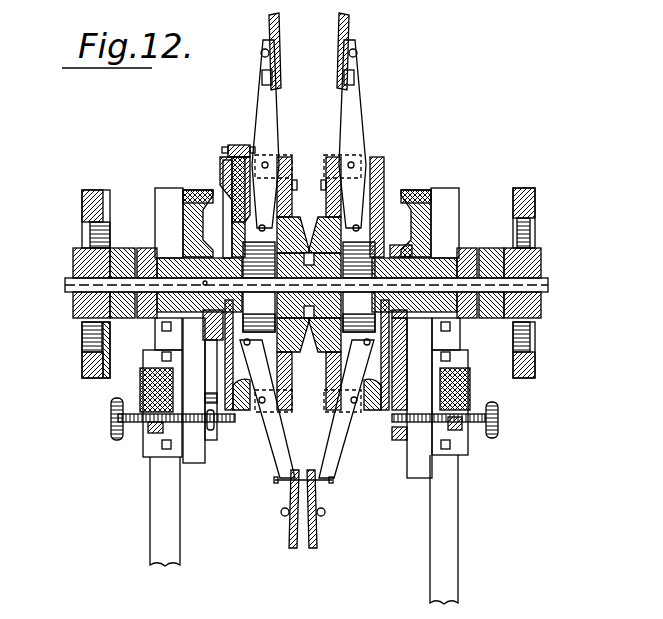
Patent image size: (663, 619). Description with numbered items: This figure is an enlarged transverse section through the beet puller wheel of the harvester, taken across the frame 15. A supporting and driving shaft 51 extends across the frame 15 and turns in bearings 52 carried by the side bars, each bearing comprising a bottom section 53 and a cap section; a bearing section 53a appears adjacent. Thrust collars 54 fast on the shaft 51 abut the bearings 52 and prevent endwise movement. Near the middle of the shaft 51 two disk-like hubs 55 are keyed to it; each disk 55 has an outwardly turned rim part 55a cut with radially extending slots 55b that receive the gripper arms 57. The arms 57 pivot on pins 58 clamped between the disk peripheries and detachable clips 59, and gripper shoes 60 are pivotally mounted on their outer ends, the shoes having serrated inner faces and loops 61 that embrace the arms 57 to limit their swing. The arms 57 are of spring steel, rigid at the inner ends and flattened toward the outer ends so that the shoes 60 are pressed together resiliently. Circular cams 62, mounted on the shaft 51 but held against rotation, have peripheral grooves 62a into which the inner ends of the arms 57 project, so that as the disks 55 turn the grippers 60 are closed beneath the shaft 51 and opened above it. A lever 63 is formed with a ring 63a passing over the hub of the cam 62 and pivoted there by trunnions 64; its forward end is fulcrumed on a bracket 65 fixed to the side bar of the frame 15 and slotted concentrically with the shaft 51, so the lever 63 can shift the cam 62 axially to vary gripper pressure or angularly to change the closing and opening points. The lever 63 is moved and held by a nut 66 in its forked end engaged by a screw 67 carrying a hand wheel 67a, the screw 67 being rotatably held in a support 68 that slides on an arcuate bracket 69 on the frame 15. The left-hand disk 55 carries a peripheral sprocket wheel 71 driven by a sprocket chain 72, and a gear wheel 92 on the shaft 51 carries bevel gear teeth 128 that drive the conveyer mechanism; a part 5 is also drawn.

The collar 5 is at (149, 250).
The frame 15 is at (160, 481).
The supporting and driving shaft 51 is at (68, 281).
The bearing 52 is at (169, 258).
The bottom section 53 is at (307, 325).
The sleeve 53a is at (120, 318).
The thrust collar 54 is at (125, 248).
The disk-like hub 55 is at (293, 192).
The outwardly turned rim part 55a is at (230, 195).
The radially extending slot 55b is at (243, 190).
The gripper arm 57 is at (348, 107).
The pivot pin 58 is at (275, 160).
The detachable clip 59 is at (292, 165).
The gripper shoe 60 is at (338, 37).
The loop 61 is at (262, 79).
The circular cam 62 is at (309, 287).
The groove 62a is at (245, 343).
The lever 63 is at (220, 368).
The ring 63a is at (418, 250).
The pivot pin 64 is at (203, 282).
The bracket 65 is at (422, 196).
The nut 66 is at (396, 432).
The screw 67 is at (197, 424).
The hand wheel 67a is at (111, 418).
The support 68 is at (148, 430).
The arcuate bracket 69 is at (143, 390).
The sprocket wheel 71 is at (240, 145).
The sprocket chain 72 is at (228, 150).
The gear wheel 92 is at (90, 230).
The bevel gear teeth 128 is at (82, 348).